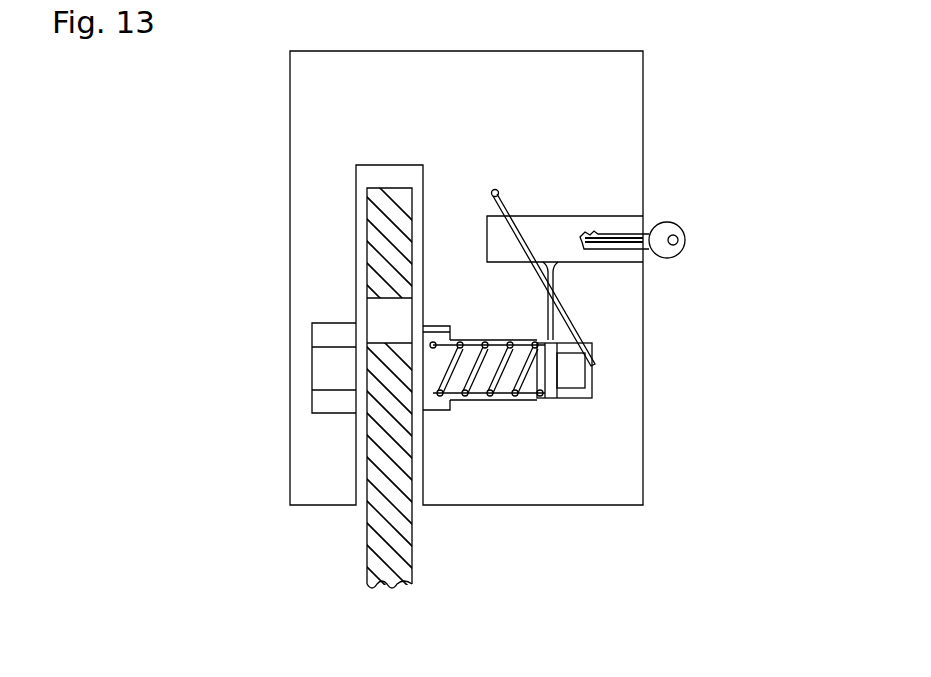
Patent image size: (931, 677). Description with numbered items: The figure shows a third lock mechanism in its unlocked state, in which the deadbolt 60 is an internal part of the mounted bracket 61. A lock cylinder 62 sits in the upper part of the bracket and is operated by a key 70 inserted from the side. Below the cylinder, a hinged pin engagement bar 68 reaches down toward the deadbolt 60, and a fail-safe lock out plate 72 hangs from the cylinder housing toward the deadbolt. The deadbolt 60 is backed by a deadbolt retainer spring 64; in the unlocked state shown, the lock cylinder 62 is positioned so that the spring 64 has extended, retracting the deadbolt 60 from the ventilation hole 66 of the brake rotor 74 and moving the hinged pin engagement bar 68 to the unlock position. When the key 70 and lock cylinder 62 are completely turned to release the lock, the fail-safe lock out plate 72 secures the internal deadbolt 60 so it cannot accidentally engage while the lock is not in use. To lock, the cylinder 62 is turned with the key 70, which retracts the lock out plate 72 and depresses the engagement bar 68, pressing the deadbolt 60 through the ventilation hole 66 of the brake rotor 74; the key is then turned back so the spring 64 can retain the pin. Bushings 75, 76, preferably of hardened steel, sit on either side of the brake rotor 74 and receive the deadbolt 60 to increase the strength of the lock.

The mounted bracket 61 is at (466, 278).
The lock cylinder 62 is at (613, 225).
The key 70 is at (683, 238).
The fail-safe lock out plate 72 is at (550, 323).
The hinged pin engagement bar 68 is at (572, 332).
The deadbolt 60 is at (567, 372).
The deadbolt retainer spring 64 is at (492, 393).
The bushing 75 is at (433, 407).
The brake rotor 74 is at (390, 550).
The ventilation hole 66 is at (387, 320).
The bushing 76 is at (325, 332).